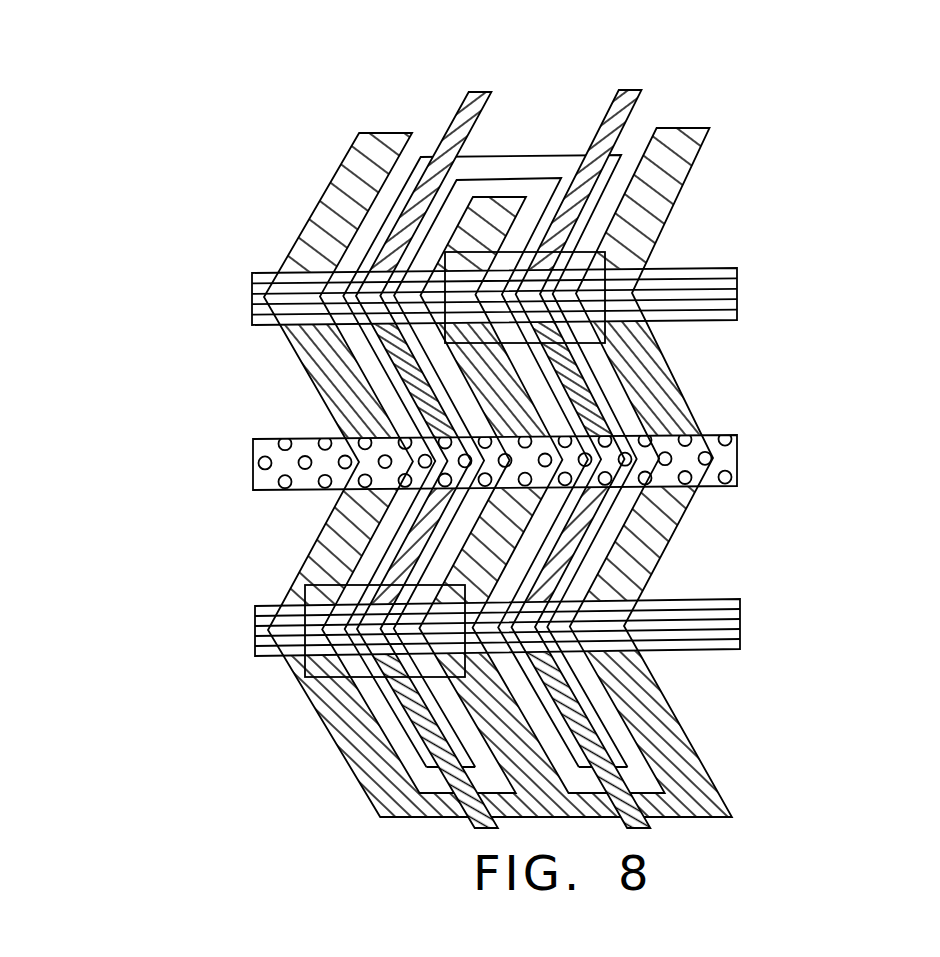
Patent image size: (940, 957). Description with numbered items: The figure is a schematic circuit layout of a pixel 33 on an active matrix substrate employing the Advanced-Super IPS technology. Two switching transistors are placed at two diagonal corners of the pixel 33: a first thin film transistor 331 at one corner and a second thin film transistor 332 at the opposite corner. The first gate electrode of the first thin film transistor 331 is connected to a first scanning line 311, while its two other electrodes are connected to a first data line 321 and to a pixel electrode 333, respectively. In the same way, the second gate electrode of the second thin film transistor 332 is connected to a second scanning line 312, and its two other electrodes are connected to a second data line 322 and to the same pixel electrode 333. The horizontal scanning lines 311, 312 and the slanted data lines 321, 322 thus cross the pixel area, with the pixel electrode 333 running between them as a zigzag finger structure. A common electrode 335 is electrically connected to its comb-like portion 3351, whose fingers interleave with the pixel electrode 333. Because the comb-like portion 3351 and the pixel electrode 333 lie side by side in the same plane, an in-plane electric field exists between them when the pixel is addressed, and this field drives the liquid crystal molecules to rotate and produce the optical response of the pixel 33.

The pixel 33 is at (258, 139).
The comb-like portion 3351 is at (371, 160).
The second data line 322 is at (481, 94).
The pixel electrode 333 is at (517, 168).
The first data line 321 is at (631, 91).
The first thin film transistor 331 is at (606, 258).
The first scanning line 311 is at (738, 291).
The common electrode 335 is at (255, 482).
The second scanning line 312 is at (262, 641).
The second thin film transistor 332 is at (302, 670).